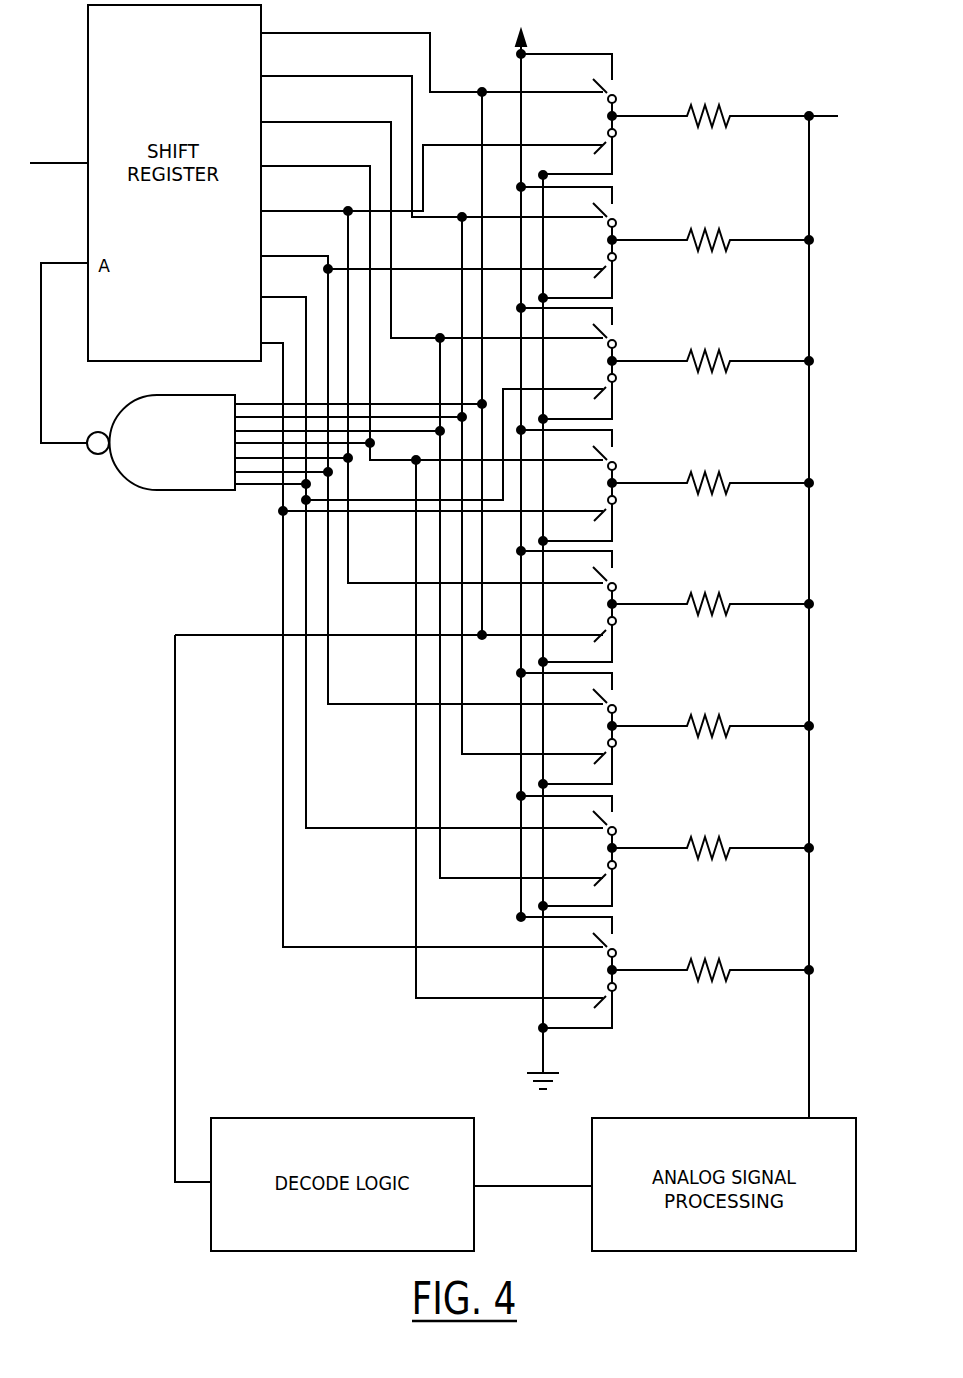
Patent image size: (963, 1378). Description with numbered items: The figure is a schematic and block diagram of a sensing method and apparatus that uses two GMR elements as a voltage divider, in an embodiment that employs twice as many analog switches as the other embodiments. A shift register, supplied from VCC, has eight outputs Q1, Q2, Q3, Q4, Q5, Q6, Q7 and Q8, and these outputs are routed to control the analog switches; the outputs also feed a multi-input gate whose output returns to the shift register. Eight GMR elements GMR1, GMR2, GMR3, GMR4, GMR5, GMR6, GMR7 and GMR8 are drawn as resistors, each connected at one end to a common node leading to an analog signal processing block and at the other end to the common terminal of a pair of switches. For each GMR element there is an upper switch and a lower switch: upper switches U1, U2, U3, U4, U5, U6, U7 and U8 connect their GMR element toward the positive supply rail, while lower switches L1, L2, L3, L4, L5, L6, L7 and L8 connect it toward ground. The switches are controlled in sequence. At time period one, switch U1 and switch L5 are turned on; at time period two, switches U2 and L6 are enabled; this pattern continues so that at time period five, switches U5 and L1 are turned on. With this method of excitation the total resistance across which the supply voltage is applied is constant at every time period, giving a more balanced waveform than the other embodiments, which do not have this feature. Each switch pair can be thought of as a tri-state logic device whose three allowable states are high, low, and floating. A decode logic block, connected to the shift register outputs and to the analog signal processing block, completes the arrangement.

The shift register output Q1 is at (389, 602).
The shift register output Q2 is at (416, 409).
The shift register output Q3 is at (416, 494).
The shift register output Q4 is at (416, 576).
The shift register output Q5 is at (416, 364).
The shift register output Q6 is at (416, 474).
The shift register output Q7 is at (416, 557).
The shift register output Q8 is at (416, 639).
The switch U1 is at (590, 87).
The switch U2 is at (590, 211).
The upper switch U3 is at (590, 332).
The upper switch U4 is at (590, 454).
The switch U5 is at (590, 575).
The upper switch U6 is at (590, 697).
The upper switch U7 is at (590, 819).
The upper switch U8 is at (590, 941).
The switch L1 is at (591, 151).
The lower switch L2 is at (591, 275).
The lower switch L3 is at (591, 396).
The lower switch L4 is at (591, 518).
The switch L5 is at (591, 639).
The switch L6 is at (591, 761).
The lower switch L7 is at (591, 883).
The lower switch L8 is at (591, 1005).
The giant magnetoresistive sensor element GMR1 is at (727, 103).
The giant magnetoresistive sensor element GMR2 is at (714, 227).
The giant magnetoresistive sensor element GMR3 is at (714, 348).
The giant magnetoresistive sensor element GMR4 is at (714, 470).
The giant magnetoresistive sensor element GMR5 is at (714, 591).
The giant magnetoresistive sensor element GMR6 is at (714, 713).
The giant magnetoresistive sensor element GMR7 is at (714, 835).
The giant magnetoresistive sensor element GMR8 is at (714, 957).
The supply voltage Vcc VCC is at (59, 149).